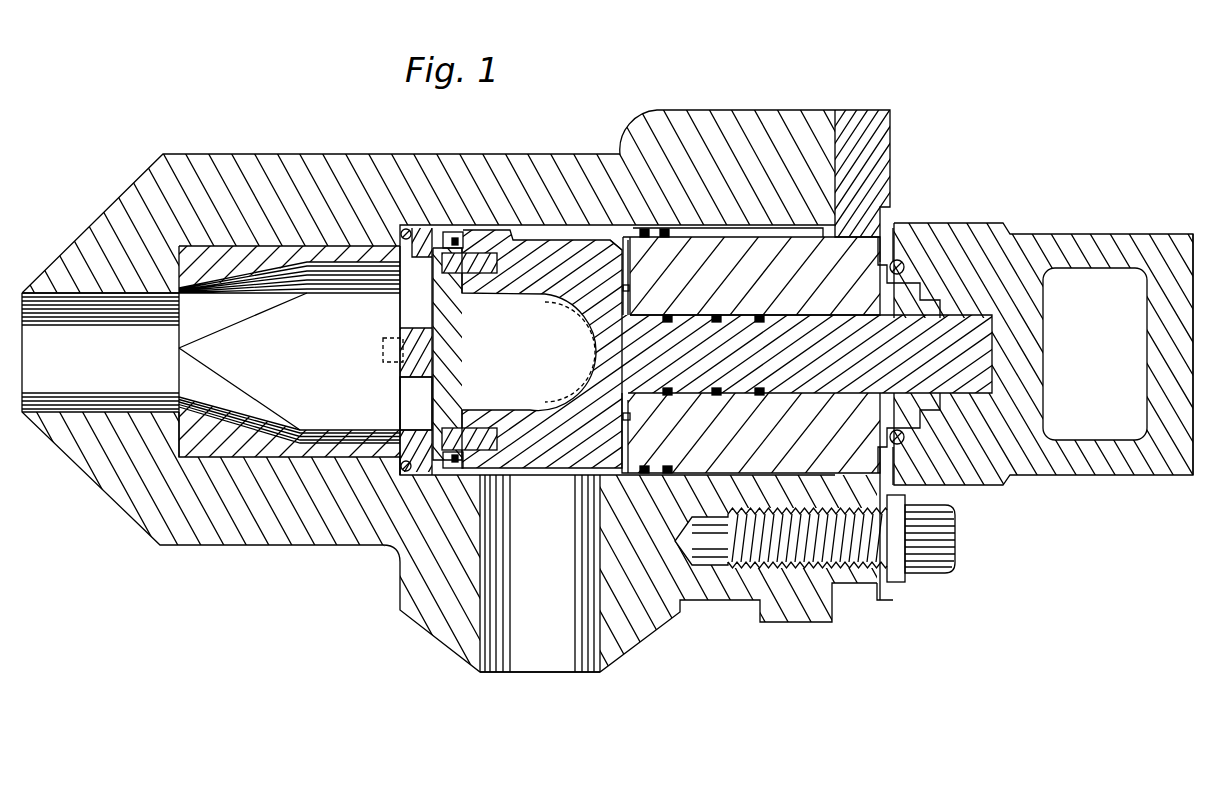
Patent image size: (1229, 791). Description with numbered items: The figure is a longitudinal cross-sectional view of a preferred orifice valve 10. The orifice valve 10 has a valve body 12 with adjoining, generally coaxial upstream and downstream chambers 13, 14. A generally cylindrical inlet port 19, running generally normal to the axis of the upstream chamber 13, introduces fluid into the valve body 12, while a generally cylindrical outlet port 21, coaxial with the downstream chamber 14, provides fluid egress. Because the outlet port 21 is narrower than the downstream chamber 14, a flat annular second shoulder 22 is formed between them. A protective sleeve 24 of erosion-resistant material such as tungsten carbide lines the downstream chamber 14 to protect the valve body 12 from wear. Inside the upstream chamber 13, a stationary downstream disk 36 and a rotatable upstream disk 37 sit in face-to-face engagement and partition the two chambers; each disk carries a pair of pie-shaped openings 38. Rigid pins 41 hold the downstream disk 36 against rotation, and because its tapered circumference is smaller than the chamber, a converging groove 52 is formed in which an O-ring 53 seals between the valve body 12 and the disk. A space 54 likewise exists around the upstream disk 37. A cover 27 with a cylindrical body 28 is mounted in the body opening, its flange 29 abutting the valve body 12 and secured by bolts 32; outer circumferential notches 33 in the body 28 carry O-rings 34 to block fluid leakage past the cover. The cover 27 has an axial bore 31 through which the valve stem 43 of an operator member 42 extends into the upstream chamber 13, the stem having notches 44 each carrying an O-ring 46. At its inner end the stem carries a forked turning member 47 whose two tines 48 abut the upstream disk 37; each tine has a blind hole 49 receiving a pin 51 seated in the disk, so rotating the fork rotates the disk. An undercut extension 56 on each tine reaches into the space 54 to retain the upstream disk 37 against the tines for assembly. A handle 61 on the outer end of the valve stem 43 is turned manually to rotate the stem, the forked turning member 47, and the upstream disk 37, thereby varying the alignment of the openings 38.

The orifice valve 10 is at (940, 118).
The valve body 12 is at (690, 112).
The upstream chamber 13 is at (572, 257).
The downstream chamber 14 is at (300, 285).
The inlet port 19 is at (606, 670).
The outlet port 21 is at (35, 312).
The second shoulder 22 is at (178, 418).
The protective sleeve 24 is at (205, 258).
The cover 27 is at (858, 113).
The cylindrical body 28 is at (767, 245).
The flange 29 is at (870, 208).
The axial bore 31 is at (948, 325).
The bolts 32 is at (956, 538).
The outer circumferential notches 33 is at (655, 470).
The O-rings 34 is at (665, 470).
The stationary downstream disk 36 is at (404, 364).
The rotatable upstream disk 37 is at (455, 372).
The pie-shaped openings 38 is at (411, 401).
The rigid pins 41 is at (383, 350).
The operator member 42 is at (1118, 234).
The valve stem 43 is at (1048, 265).
The notches 44 is at (692, 320).
The O-ring 46 is at (760, 390).
The forked turning member 47 is at (600, 250).
The tines 48 is at (527, 430).
The blind hole 49 is at (480, 274).
The pin 51 is at (486, 274).
The groove 52 is at (443, 238).
The O-ring 53 is at (402, 232).
The space 54 is at (404, 468).
The undercut extension 56 is at (446, 463).
The handle 61 is at (1183, 276).